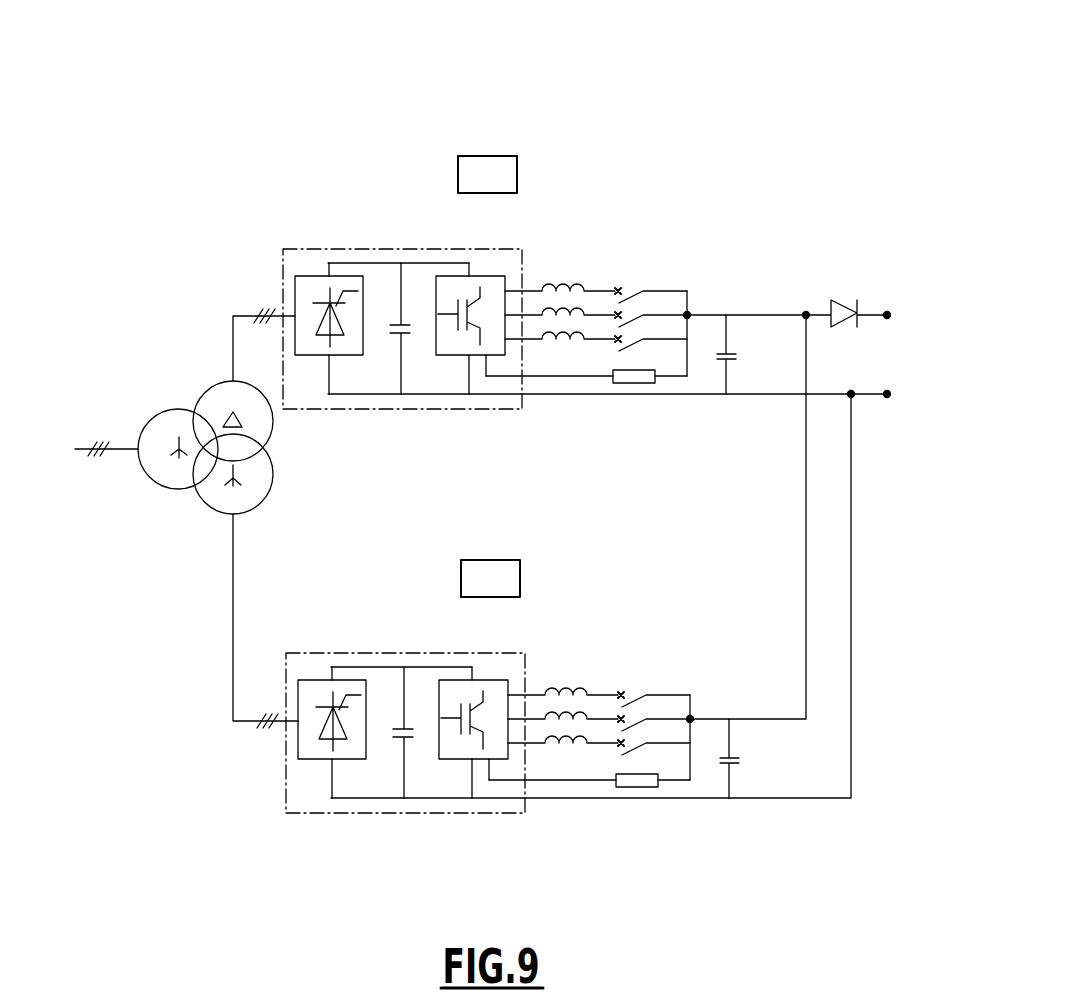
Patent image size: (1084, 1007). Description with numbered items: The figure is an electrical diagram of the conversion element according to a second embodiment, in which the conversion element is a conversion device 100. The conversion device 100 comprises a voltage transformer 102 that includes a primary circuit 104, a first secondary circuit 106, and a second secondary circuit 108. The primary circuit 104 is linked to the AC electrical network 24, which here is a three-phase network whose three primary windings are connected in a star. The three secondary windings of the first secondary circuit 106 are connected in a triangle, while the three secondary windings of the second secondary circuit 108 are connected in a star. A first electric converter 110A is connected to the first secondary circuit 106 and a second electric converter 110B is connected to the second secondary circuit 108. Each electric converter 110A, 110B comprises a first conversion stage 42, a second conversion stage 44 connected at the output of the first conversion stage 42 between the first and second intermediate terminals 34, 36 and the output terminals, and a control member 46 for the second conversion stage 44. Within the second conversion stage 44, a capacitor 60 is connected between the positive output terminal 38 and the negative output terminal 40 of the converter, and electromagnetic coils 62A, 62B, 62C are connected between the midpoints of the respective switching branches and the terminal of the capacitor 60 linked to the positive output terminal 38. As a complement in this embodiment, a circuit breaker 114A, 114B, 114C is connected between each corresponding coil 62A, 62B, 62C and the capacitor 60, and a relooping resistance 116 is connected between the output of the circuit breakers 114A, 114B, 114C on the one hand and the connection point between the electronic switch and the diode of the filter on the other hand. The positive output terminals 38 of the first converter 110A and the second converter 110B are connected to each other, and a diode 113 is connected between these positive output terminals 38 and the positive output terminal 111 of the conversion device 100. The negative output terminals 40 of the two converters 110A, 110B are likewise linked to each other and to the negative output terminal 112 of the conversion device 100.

The conversion device 100 is at (748, 128).
The voltage transformer 102 is at (168, 368).
The AC electrical network 24 is at (82, 455).
The primary circuit 104 is at (163, 487).
The first secondary circuit 106 is at (273, 430).
The second secondary circuit 108 is at (273, 486).
The first electric converter 110A is at (582, 178).
The second electric converter 110B is at (567, 603).
The first conversion stage 42 is at (367, 256).
The control member 46 is at (489, 376).
The second conversion stage 44 is at (463, 255).
The first intermediate terminal 34 is at (472, 276).
The second intermediate terminal 36 is at (478, 356).
The electromagnetic coil 62A is at (574, 283).
The electromagnetic coil 62B is at (540, 320).
The electromagnetic coil 62C is at (586, 339).
The circuit breaker 114A is at (632, 297).
The circuit breaker 114B is at (640, 320).
The circuit breaker 114C is at (643, 343).
The relooping resistance 116 is at (632, 383).
The capacitor 60 is at (738, 349).
The positive output terminal 38 is at (806, 310).
The diode 113 is at (848, 298).
The positive output terminal 111 is at (887, 308).
The negative output terminal 40 is at (849, 398).
The negative output terminal 112 is at (887, 398).